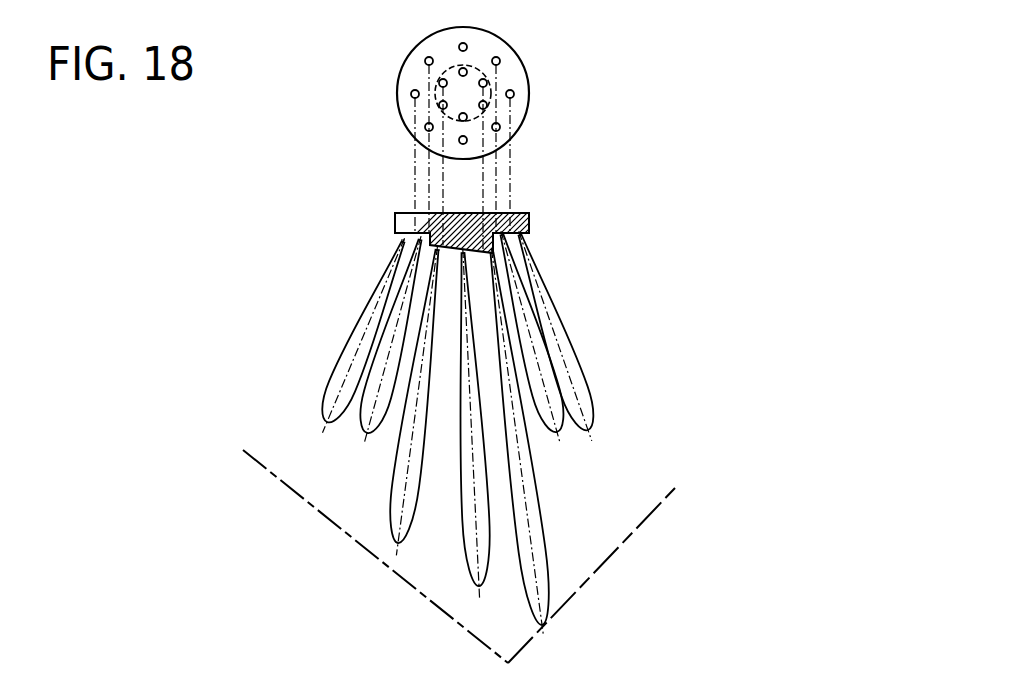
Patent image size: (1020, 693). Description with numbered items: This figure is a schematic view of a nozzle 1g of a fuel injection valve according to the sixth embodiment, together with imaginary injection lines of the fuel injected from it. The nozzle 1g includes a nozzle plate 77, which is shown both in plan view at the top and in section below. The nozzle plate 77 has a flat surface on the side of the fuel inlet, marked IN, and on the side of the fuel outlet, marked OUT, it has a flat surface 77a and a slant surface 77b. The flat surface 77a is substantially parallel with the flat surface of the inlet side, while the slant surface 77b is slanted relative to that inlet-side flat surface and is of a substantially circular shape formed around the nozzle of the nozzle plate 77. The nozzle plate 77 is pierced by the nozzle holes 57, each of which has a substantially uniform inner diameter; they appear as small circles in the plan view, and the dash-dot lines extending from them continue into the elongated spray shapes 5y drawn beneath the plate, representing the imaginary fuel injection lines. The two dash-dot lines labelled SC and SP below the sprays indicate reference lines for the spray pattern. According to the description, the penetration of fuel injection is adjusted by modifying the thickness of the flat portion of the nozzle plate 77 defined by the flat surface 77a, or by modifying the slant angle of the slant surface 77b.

The nozzle 1g is at (538, 61).
The nozzle holes 57 is at (411, 92).
The nozzle plate 77 is at (536, 222).
The flat surface 77a is at (402, 248).
The slant surface 77b is at (441, 252).
The fuel spray 5y is at (318, 437).
The fuel inlet IN is at (527, 199).
The fuel outlet OUT is at (540, 251).
The spray center line SC is at (347, 530).
The spray line SP is at (614, 548).